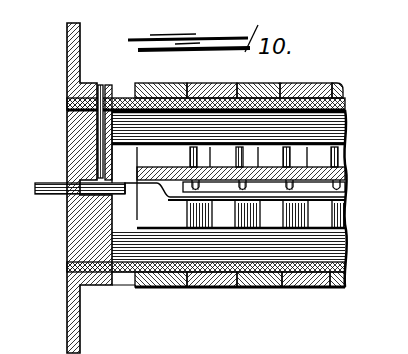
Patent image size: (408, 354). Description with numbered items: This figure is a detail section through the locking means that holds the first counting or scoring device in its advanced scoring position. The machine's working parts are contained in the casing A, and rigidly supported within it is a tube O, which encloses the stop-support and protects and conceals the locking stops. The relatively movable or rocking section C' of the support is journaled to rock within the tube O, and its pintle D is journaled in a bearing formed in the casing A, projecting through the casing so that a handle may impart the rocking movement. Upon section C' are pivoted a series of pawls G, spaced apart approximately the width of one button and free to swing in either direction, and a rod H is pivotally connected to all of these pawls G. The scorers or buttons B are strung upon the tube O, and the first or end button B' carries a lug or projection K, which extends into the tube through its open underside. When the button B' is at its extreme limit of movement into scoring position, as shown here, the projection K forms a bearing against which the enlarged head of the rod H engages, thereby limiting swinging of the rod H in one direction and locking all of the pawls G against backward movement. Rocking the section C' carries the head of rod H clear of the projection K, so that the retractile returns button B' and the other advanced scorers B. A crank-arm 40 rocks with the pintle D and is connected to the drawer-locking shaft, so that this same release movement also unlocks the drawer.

The casing A is at (67, 50).
The crank-arm 40 is at (100, 85).
The counting or scoring device B is at (240, 191).
The first scoring device B' is at (161, 297).
The rocking section of the support C' is at (245, 198).
The pintle D is at (65, 197).
The pivoted pawls G is at (250, 202).
The rod H is at (222, 200).
The lug or projection K is at (147, 205).
The tube O is at (128, 275).